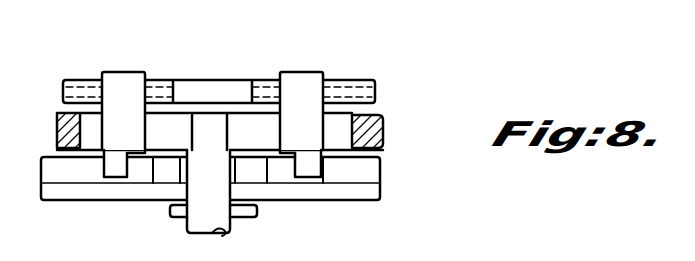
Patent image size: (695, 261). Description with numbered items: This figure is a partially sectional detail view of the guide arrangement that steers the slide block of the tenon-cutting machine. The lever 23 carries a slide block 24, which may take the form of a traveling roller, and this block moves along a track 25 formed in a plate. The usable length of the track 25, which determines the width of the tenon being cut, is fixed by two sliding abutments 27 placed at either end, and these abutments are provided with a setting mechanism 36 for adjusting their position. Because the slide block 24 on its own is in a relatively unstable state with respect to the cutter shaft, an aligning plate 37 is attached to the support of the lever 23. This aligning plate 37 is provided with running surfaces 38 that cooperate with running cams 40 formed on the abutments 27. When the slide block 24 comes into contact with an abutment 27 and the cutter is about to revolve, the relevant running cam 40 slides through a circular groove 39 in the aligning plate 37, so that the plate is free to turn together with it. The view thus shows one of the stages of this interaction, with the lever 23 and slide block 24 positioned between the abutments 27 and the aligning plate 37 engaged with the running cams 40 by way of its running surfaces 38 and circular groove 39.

The lever 23 is at (225, 223).
The slide block 24 is at (213, 120).
The track 25 is at (250, 125).
The sliding abutments 27 is at (117, 92).
The setting mechanism 36 is at (188, 87).
The aligning plate 37 is at (382, 180).
The running surfaces 38 is at (68, 173).
The circular groove 39 is at (165, 175).
The running cams 40 is at (117, 178).